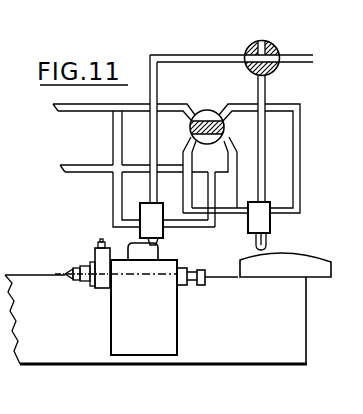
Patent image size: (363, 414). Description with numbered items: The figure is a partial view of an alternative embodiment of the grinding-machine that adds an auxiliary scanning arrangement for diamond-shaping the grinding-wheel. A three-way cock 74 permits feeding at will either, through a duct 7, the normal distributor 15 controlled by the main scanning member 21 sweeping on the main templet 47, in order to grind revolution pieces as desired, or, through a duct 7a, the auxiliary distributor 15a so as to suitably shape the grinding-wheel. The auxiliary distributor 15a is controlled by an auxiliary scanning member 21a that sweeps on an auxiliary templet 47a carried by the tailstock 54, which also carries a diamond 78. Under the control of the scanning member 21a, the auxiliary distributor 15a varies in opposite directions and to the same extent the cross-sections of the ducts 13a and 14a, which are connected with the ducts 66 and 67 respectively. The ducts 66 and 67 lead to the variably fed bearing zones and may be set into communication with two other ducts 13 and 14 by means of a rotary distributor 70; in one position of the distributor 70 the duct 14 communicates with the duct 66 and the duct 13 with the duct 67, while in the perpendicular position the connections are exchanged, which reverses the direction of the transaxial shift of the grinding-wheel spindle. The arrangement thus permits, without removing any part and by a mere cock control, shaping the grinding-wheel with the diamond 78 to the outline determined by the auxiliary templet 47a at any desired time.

The three-way cock 74 is at (276, 50).
The rotary distributor 70 is at (209, 111).
The duct 7 is at (258, 90).
The duct 7a is at (157, 144).
The duct 66 is at (78, 111).
The duct 67 is at (78, 166).
The duct 14 is at (299, 151).
The duct 14a is at (213, 211).
The duct 13 is at (238, 203).
The duct 13a is at (114, 205).
The normal distributor 15 is at (270, 222).
The auxiliary distributor 15a is at (163, 208).
The main scanning member 21 is at (255, 244).
The auxiliary scanning member 21a is at (158, 241).
The main templet 47 is at (323, 262).
The auxiliary templet 47a is at (160, 255).
The diamond 78 is at (100, 241).
The tailstock 54 is at (170, 308).